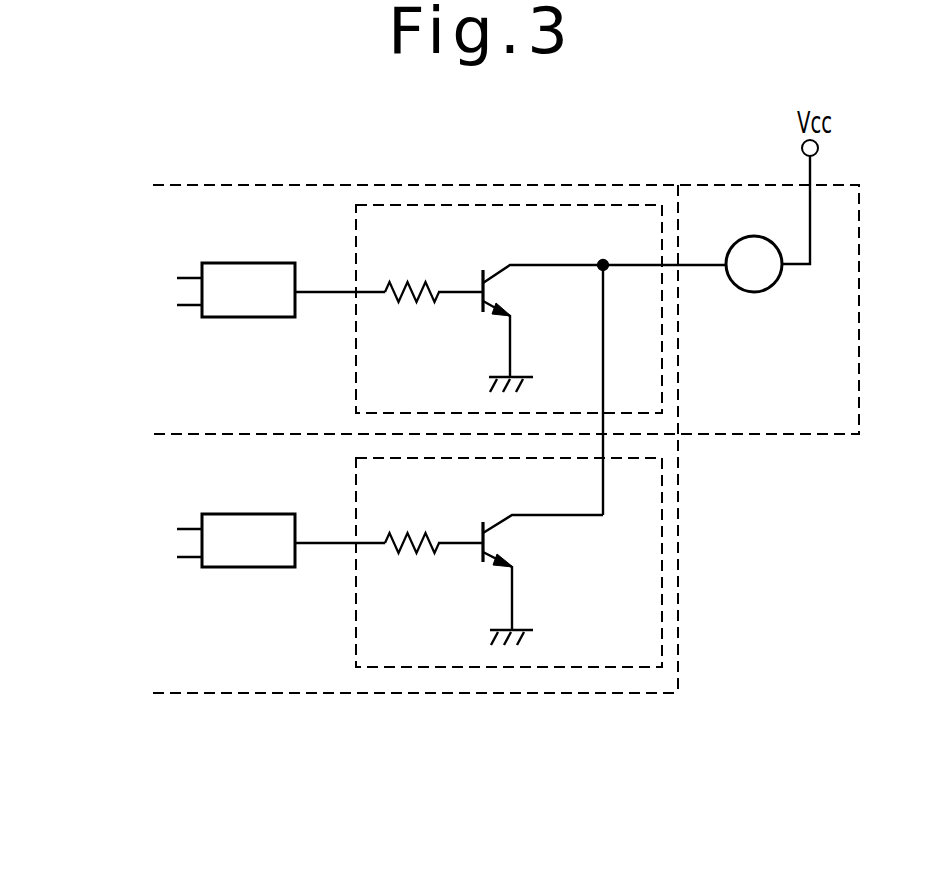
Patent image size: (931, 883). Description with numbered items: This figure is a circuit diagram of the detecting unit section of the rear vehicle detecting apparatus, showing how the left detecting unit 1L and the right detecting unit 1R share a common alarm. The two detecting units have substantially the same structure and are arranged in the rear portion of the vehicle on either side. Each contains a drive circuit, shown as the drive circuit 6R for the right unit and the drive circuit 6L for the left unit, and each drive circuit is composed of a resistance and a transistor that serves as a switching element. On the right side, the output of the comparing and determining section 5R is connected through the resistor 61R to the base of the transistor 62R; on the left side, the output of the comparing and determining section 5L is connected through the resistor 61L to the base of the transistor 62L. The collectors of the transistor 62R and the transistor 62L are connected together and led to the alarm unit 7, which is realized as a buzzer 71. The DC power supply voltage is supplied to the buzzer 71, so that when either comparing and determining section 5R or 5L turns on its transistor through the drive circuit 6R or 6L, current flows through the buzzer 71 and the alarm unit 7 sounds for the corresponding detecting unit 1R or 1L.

The right detecting unit 1R is at (177, 292).
The left detecting unit 1L is at (170, 538).
The comparing and determining section 5R is at (247, 263).
The comparing and determining section 5L is at (258, 567).
The drive circuit 6R is at (553, 205).
The drive circuit 6L is at (556, 667).
The resistor 61R is at (407, 298).
The resistor 61L is at (407, 549).
The transistor 62R is at (498, 288).
The transistor 62L is at (500, 540).
The alarm unit 7 is at (712, 185).
The buzzer 71 is at (757, 292).